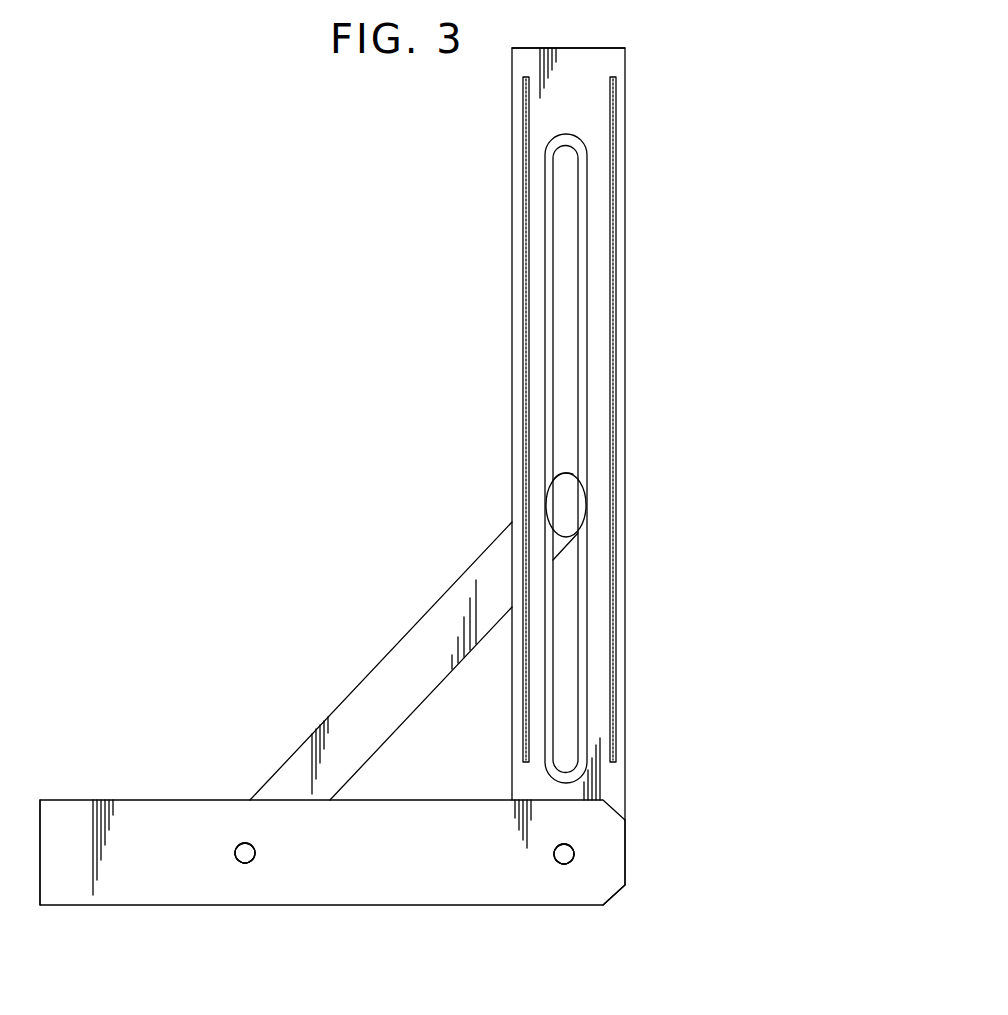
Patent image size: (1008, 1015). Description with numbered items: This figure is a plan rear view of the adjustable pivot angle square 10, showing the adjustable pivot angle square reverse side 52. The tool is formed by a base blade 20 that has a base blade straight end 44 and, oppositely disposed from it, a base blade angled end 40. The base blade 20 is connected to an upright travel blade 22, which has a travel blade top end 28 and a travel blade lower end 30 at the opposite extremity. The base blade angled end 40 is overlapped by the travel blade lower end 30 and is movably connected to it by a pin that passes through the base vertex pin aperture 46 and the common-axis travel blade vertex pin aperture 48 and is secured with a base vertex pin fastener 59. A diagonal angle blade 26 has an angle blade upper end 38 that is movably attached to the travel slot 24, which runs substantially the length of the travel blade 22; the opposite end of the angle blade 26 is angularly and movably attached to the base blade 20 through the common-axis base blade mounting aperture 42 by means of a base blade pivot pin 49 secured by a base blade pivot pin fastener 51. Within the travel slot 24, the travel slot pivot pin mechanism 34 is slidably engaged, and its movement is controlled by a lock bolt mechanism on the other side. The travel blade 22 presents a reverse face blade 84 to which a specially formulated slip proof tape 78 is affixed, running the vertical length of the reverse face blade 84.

The adjustable pivot angle square 10 is at (438, 129).
The base blade 20 is at (445, 873).
The travel blade 22 is at (626, 362).
The travel slot 24 is at (567, 277).
The angle blade 26 is at (402, 711).
The travel blade top end 28 is at (565, 47).
The travel blade lower end 30 is at (626, 866).
The travel slot pivot pin mechanism 34 is at (586, 515).
The angle blade upper end 38 is at (573, 474).
The base blade angled end 40 is at (609, 900).
The base blade mounting aperture 42 is at (240, 863).
The base blade straight end 44 is at (40, 858).
The base vertex pin aperture 46 is at (557, 861).
The travel blade vertex pin aperture 48 is at (563, 865).
The base blade pivot pin 49 is at (250, 861).
The base blade pivot pin fastener 51 is at (245, 863).
The adjustable pivot angle square reverse side 52 is at (450, 486).
The base vertex pin fastener 59 is at (572, 848).
The slip proof tape 78 is at (524, 133).
The reverse face blade 84 is at (590, 75).